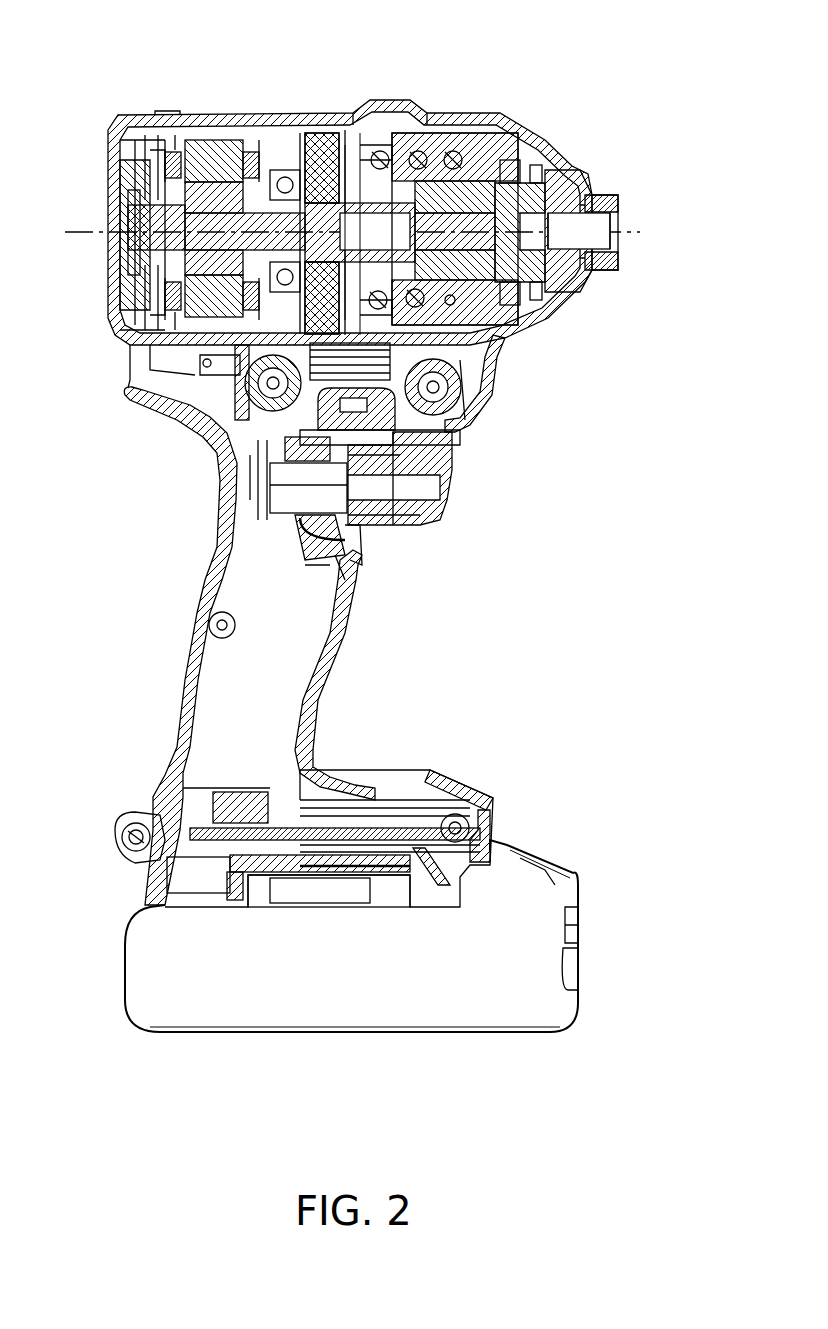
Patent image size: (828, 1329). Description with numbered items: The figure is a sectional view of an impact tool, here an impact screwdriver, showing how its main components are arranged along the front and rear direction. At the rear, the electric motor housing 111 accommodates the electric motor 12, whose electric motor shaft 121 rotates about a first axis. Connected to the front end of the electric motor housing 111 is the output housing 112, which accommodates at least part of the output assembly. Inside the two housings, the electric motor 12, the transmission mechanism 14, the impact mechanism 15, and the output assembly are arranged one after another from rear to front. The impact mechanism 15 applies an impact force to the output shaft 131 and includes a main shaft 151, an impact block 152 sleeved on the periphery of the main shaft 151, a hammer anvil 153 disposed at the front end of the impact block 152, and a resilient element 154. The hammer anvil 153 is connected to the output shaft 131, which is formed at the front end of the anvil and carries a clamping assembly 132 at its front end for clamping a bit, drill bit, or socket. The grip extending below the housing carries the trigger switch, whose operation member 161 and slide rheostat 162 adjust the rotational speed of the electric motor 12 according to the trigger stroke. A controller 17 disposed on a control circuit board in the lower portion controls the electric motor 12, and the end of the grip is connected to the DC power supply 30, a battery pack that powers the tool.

The electric motor 12 is at (212, 142).
The electric motor shaft 121 is at (137, 160).
The transmission mechanism 14 is at (298, 138).
The electric motor housing 111 is at (380, 100).
The main shaft 151 is at (372, 200).
The impact mechanism 15 is at (415, 132).
The resilient element 154 is at (428, 158).
The impact block 152 is at (478, 122).
The hammer anvil 153 is at (495, 200).
The output housing 112 is at (565, 168).
The output shaft 131 is at (618, 200).
The clamping assembly 132 is at (602, 262).
The operation member 161 is at (448, 495).
The slide rheostat 162 is at (370, 540).
The controller 17 is at (380, 805).
The DC power supply 30 is at (522, 900).